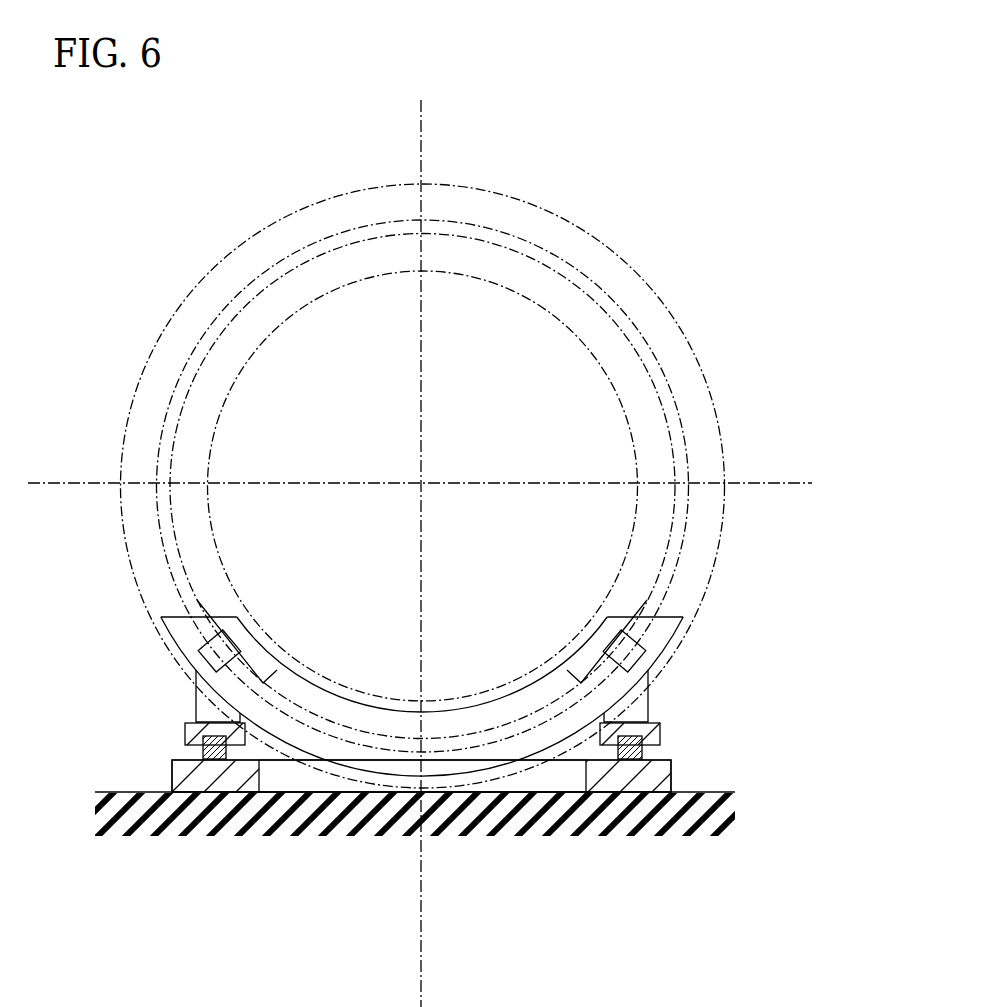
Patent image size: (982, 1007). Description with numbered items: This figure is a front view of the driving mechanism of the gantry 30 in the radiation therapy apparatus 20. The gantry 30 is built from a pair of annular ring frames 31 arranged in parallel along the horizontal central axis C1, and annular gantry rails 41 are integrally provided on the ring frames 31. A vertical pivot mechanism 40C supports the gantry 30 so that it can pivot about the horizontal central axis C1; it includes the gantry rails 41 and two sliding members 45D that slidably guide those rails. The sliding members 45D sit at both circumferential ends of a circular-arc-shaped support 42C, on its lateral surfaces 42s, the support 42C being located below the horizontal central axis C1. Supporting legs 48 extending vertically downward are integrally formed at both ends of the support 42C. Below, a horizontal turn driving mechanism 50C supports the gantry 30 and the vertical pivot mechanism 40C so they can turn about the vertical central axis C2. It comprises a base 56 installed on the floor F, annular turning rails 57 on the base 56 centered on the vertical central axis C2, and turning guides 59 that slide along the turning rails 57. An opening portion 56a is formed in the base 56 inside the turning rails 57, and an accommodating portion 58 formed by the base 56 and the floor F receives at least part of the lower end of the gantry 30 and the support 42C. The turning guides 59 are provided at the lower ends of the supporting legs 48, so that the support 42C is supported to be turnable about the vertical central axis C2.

The radiation therapy apparatus 20 is at (423, 454).
The gantry 30 is at (247, 240).
The ring frame 31 is at (355, 188).
The vertical pivot mechanism 40C is at (478, 659).
The gantry rail 41 is at (422, 671).
The support 42C is at (365, 702).
The lateral surface 42s is at (490, 715).
The sliding member 45D is at (245, 637).
The supporting leg 48 is at (195, 698).
The horizontal turn driving mechanism 50C is at (458, 797).
The base 56 is at (172, 786).
The opening portion 56a is at (268, 793).
The turning rail 57 is at (184, 756).
The accommodating portion 58 is at (466, 793).
The turning guide 59 is at (183, 737).
The horizontal central axis C1 is at (421, 484).
The vertical central axis C2 is at (421, 183).
The floor F is at (727, 793).